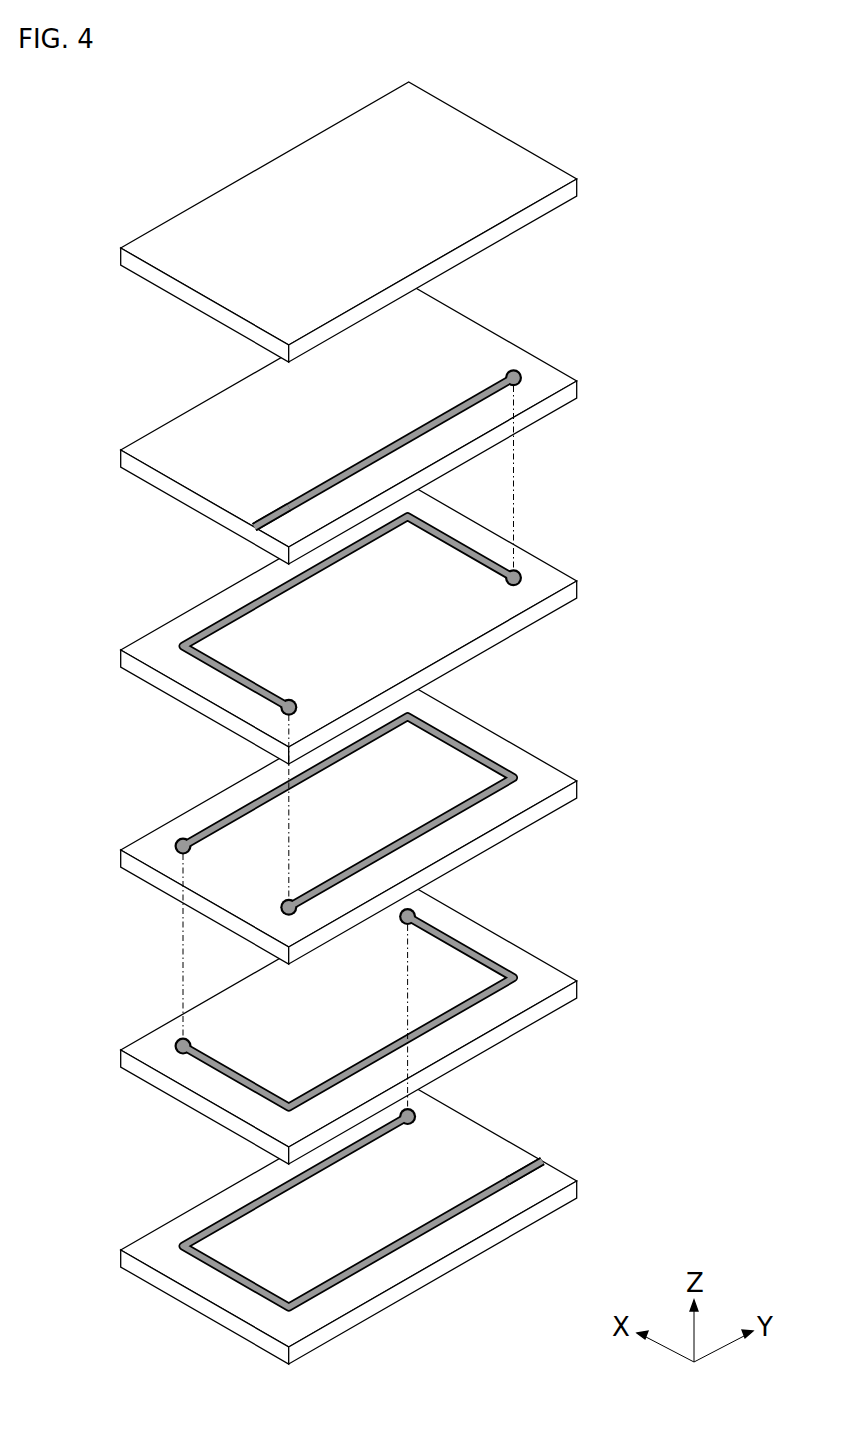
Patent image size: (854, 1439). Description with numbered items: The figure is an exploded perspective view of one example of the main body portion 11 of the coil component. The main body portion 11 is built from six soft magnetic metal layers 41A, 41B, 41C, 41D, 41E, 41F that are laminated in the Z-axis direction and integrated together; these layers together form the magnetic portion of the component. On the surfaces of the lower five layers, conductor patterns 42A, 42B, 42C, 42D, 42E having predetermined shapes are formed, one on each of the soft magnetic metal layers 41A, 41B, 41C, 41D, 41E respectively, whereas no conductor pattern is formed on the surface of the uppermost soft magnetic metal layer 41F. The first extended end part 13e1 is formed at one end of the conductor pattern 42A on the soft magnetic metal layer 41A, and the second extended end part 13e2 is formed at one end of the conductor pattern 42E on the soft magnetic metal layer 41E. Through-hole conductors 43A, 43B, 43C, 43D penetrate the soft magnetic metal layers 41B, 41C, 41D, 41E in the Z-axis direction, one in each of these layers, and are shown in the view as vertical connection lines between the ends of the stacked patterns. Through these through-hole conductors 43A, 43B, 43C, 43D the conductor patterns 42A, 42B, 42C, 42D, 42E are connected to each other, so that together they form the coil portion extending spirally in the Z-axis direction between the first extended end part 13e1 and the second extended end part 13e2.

The main body portion 11 is at (628, 150).
The soft magnetic metal layer 41A is at (571, 1197).
The soft magnetic metal layer 41B is at (571, 993).
The soft magnetic metal layer 41C is at (571, 793).
The soft magnetic metal layer 41D is at (571, 593).
The soft magnetic metal layer 41E is at (571, 392).
The soft magnetic metal layer 41F is at (571, 191).
The conductor pattern 42A is at (247, 1207).
The conductor pattern 42B is at (247, 1087).
The conductor pattern 42C is at (250, 808).
The conductor pattern 42D is at (250, 605).
The conductor pattern 42E is at (322, 483).
The through-hole conductor 43A is at (408, 1060).
The through-hole conductor 43B is at (180, 957).
The through-hole conductor 43C is at (287, 768).
The through-hole conductor 43D is at (514, 484).
The first extended end part 13e1 is at (547, 1157).
The second extended end part 13e2 is at (253, 522).